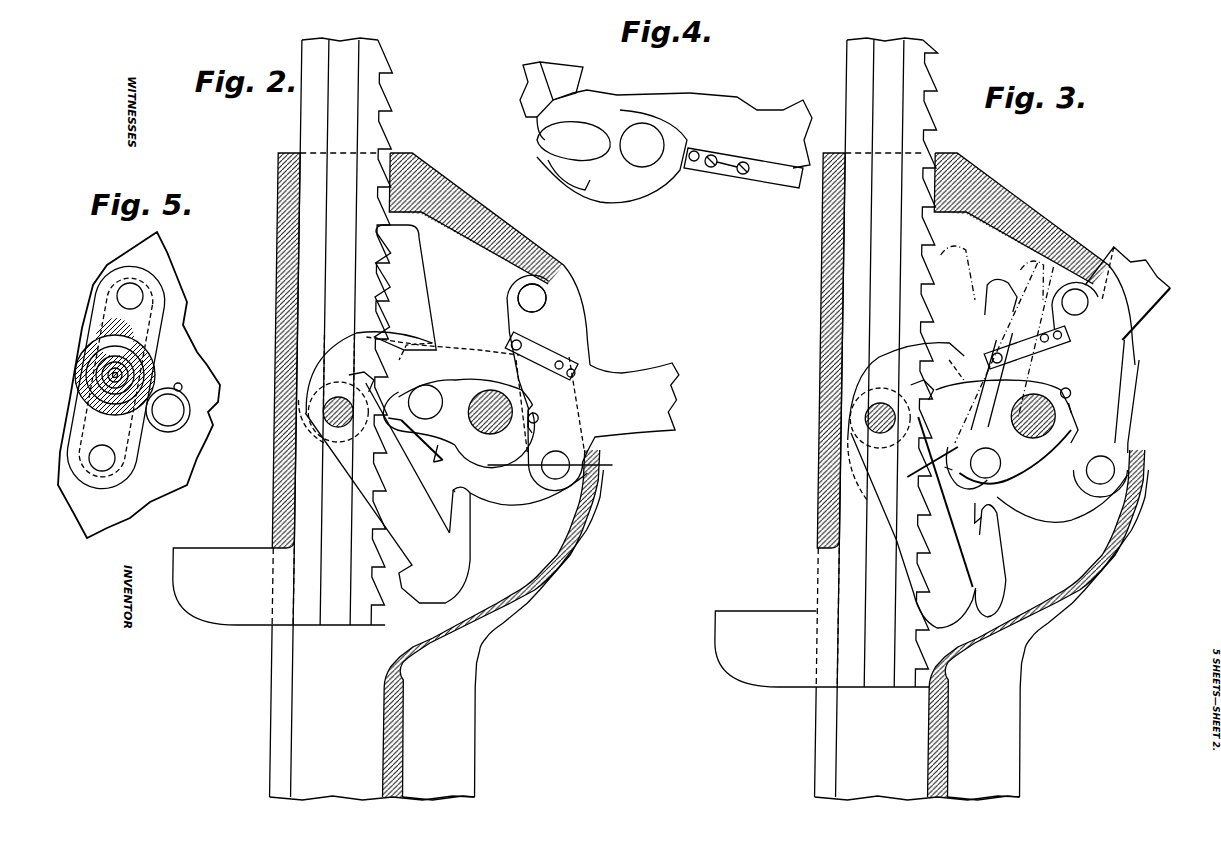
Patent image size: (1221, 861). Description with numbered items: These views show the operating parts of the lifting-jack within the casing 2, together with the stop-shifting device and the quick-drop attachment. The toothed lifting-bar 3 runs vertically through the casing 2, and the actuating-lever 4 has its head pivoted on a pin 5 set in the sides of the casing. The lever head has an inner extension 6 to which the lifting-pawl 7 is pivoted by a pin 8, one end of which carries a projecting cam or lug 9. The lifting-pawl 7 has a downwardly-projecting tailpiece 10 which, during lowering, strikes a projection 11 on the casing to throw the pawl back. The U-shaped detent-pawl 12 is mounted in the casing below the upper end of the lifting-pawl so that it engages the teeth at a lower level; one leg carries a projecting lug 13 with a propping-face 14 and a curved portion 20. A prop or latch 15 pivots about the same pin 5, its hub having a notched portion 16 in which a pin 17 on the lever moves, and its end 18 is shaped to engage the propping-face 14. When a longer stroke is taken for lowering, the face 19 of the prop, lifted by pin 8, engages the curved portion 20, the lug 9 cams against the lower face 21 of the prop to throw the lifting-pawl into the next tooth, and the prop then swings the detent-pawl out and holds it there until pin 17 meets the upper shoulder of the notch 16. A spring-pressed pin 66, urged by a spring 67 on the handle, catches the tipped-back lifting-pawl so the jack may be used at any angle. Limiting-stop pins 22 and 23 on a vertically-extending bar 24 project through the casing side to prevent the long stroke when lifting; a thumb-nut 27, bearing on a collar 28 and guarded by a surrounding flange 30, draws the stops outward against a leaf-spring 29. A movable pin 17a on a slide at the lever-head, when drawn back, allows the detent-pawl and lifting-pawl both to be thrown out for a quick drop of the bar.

In FIG. 2, the casing 2 is at (389, 476).
In FIG. 3, the casing 2 is at (933, 476).
In FIG. 5, the casing 2 is at (173, 297).
In FIG. 2, the lifting-bar 3 is at (343, 331).
In FIG. 3, the lifting-bar 3 is at (887, 362).
In FIG. 2, the actuating-lever 4 is at (640, 372).
In FIG. 3, the actuating-lever 4 is at (1130, 270).
In FIG. 4, the actuating-lever 4 is at (762, 155).
In FIG. 2, the pin 5 is at (497, 434).
In FIG. 3, the pin 5 is at (1040, 438).
In FIG. 4, the pin 5 is at (642, 145).
In FIG. 5, the pin 5 is at (168, 407).
In FIG. 2, the inner extension 6 is at (463, 443).
In FIG. 3, the inner extension 6 is at (1043, 476).
In FIG. 4, the inner extension 6 is at (580, 165).
In FIG. 2, the lifting-pawl 7 is at (406, 287).
In FIG. 3, the lifting-pawl 7 is at (1005, 322).
In FIG. 4, the lifting-pawl 7 is at (561, 81).
In FIG. 2, the pin 8 is at (419, 415).
In FIG. 3, the pin 8 is at (973, 468).
In FIG. 4, the pin 8 is at (573, 141).
In FIG. 2, the cam or lug 9 is at (394, 428).
In FIG. 3, the cam or lug 9 is at (949, 479).
In FIG. 4, the cam or lug 9 is at (540, 148).
In FIG. 2, the tailpiece 10 is at (431, 464).
In FIG. 3, the tailpiece 10 is at (979, 525).
In FIG. 4, the tailpiece 10 is at (590, 192).
In FIG. 2, the projection 11 is at (461, 501).
In FIG. 3, the projection 11 is at (992, 559).
In FIG. 2, the detent-pawl 12 is at (387, 493).
In FIG. 3, the detent-pawl 12 is at (913, 522).
In FIG. 2, the projecting lug 13 is at (385, 345).
In FIG. 3, the projecting lug 13 is at (940, 362).
In FIG. 4, the projecting lug 13 is at (525, 100).
In FIG. 2, the propping-face 14 is at (430, 345).
In FIG. 3, the propping-face 14 is at (963, 371).
In FIG. 4, the propping-face 14 is at (540, 80).
In FIG. 2, the prop or latch 15 is at (443, 356).
In FIG. 3, the prop or latch 15 is at (1007, 411).
In FIG. 4, the prop or latch 15 is at (613, 105).
In FIG. 2, the notched or recessed portion 16 is at (541, 420).
In FIG. 3, the notched or recessed portion 16 is at (1073, 405).
In FIG. 4, the notched or recessed portion 16 is at (700, 152).
In FIG. 2, the pin or projection 17 is at (540, 415).
In FIG. 3, the pin or projection 17 is at (1082, 392).
In FIG. 4, the movable pin 17a is at (693, 172).
In FIG. 2, the end 18 is at (338, 411).
In FIG. 3, the end 18 is at (930, 437).
In FIG. 4, the end 18 is at (540, 122).
In FIG. 3, the face 19 is at (928, 408).
In FIG. 4, the face 19 is at (556, 117).
In FIG. 2, the curved portion 20 is at (360, 379).
In FIG. 3, the curved portion 20 is at (920, 384).
In FIG. 2, the lower face 21 is at (388, 420).
In FIG. 3, the lower face 21 is at (924, 473).
In FIG. 4, the lower face 21 is at (538, 140).
In FIG. 2, the limiting-stop pin 22 is at (546, 297).
In FIG. 3, the limiting-stop pin 22 is at (1082, 290).
In FIG. 5, the limiting-stop pin 22 is at (130, 296).
In FIG. 2, the limiting-stop pin 23 is at (563, 466).
In FIG. 3, the limiting-stop pin 23 is at (1105, 472).
In FIG. 5, the limiting-stop pin 23 is at (102, 458).
In FIG. 2, the vertically-extending bar 24 is at (553, 315).
In FIG. 3, the vertically-extending bar 24 is at (1110, 438).
In FIG. 5, the vertically-extending bar 24 is at (137, 270).
In FIG. 5, the thumb-nut 27 is at (80, 378).
In FIG. 5, the collar 28 is at (83, 397).
In FIG. 5, the leaf-spring 29 is at (153, 335).
In FIG. 5, the surrounding flange 30 is at (78, 364).
In FIG. 2, the pin 66 is at (512, 343).
In FIG. 3, the pin 66 is at (990, 354).
In FIG. 2, the spring 67 is at (538, 352).
In FIG. 3, the spring 67 is at (1030, 352).